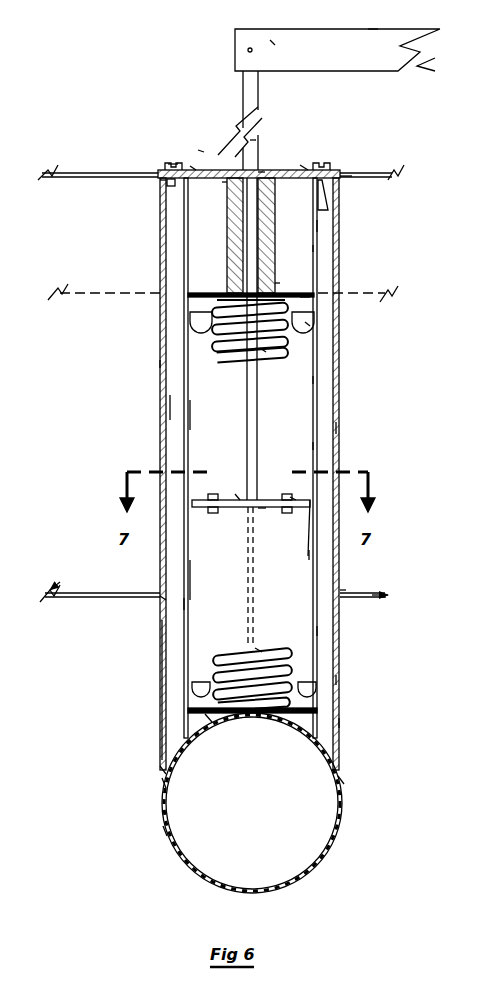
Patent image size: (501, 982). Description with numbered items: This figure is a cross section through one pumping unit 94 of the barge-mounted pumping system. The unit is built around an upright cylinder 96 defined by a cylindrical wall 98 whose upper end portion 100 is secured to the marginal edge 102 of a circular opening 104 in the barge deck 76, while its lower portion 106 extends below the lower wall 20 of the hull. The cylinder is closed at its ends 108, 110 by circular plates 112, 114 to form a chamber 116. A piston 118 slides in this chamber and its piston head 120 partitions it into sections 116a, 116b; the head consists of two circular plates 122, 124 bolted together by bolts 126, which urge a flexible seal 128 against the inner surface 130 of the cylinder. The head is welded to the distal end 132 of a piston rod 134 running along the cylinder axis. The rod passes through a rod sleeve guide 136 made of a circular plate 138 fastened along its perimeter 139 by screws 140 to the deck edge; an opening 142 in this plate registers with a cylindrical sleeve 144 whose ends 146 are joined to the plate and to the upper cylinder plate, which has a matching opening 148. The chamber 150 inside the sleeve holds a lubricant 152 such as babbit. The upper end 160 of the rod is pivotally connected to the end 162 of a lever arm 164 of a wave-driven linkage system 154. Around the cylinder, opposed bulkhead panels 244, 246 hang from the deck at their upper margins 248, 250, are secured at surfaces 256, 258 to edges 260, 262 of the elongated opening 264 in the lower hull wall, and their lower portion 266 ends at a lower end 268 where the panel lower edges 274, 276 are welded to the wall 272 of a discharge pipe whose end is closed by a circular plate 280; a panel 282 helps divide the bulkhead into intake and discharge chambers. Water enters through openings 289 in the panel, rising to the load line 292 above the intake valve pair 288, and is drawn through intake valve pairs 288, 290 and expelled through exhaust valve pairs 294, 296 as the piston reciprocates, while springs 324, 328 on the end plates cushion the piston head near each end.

The lower wall 20 is at (390, 590).
The barge deck 76 is at (76, 172).
The pumping unit 94 is at (322, 407).
The cylinder 96 is at (318, 446).
The cylindrical wall 98 is at (318, 362).
The upper end portion 100 is at (318, 226).
The marginal edge 102 is at (324, 188).
The circular opening 104 is at (292, 185).
The lower portion 106 is at (318, 654).
The end of cylinder 108 is at (305, 298).
The end of cylinder 110 is at (318, 706).
The circular plate 112 is at (200, 293).
The circular plate 114 is at (210, 716).
The chamber 116 is at (300, 458).
The chamber section 116a is at (207, 576).
The chamber section 116b is at (203, 416).
The piston 118 is at (245, 407).
The piston head 120 is at (262, 512).
The circular plate 122 is at (237, 497).
The circular plate 124 is at (240, 508).
The bolts 126 is at (292, 497).
The flexible seal 128 is at (311, 556).
The inner surface 130 is at (318, 630).
The distal end 132 is at (257, 448).
The piston rod 134 is at (252, 141).
The rod sleeve guide 136 is at (201, 152).
The circular plate 138 is at (193, 168).
The perimeter 139 is at (300, 168).
The screws 140 is at (173, 165).
The opening 142 is at (262, 172).
The cylindrical sleeve 144 is at (313, 248).
The sleeve end 146 is at (222, 184).
The opening 148 is at (318, 381).
The chamber 150 is at (228, 238).
The lubricant 152 is at (228, 265).
The linkage system 154 is at (372, 27).
The upper end 160 is at (243, 90).
The end of lever arm 162 is at (272, 42).
The lever arm 164 is at (366, 64).
The bulkhead panel 244 is at (161, 364).
The bulkhead panel 246 is at (340, 428).
The upper margin 248 is at (160, 181).
The upper margin 250 is at (345, 177).
The panel surface 256 is at (160, 599).
The panel surface 258 is at (340, 612).
The edge of lower hull wall 260 is at (160, 595).
The edge of lower hull wall 262 is at (346, 592).
The elongated opening 264 is at (180, 602).
The lower portion of bulkhead 266 is at (342, 722).
The lower end of bulkhead 268 is at (160, 770).
The pipe wall 272 is at (166, 831).
The lower edge 274 is at (164, 783).
The lower edge 276 is at (341, 781).
The circular plate 280 is at (270, 812).
The panel 282 is at (254, 608).
The intake valve pair 288 is at (190, 325).
The openings 289 is at (161, 755).
The intake valve pair 290 is at (198, 682).
The load line 292 is at (108, 292).
The exhaust valve pair 294 is at (306, 324).
The exhaust valve pair 296 is at (340, 680).
The spring 324 is at (263, 352).
The spring 328 is at (258, 652).